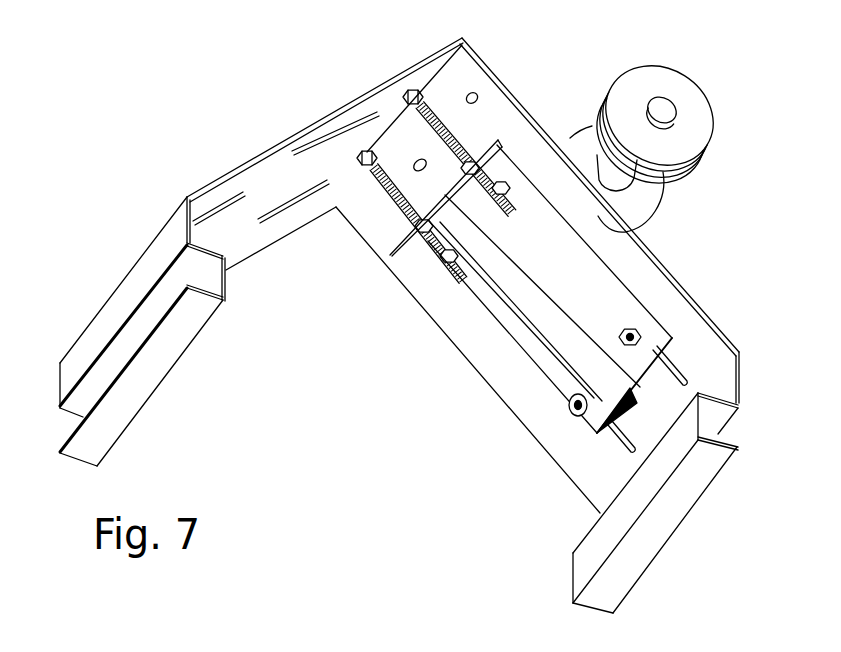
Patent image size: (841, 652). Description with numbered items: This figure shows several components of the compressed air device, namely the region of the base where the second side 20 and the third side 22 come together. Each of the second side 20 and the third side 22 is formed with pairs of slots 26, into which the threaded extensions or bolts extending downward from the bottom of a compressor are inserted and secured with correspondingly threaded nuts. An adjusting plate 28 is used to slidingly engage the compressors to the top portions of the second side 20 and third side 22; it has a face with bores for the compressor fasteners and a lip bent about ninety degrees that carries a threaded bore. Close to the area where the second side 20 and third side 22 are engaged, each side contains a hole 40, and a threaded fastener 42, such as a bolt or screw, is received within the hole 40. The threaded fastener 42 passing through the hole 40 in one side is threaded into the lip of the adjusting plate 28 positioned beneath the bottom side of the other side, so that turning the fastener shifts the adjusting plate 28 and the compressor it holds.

The second side 20 is at (257, 178).
The third side 22 is at (722, 353).
The slots 26 is at (338, 130).
The adjusting plate 28 is at (578, 290).
The hole 40 is at (482, 100).
The threaded fastener 42 is at (433, 118).